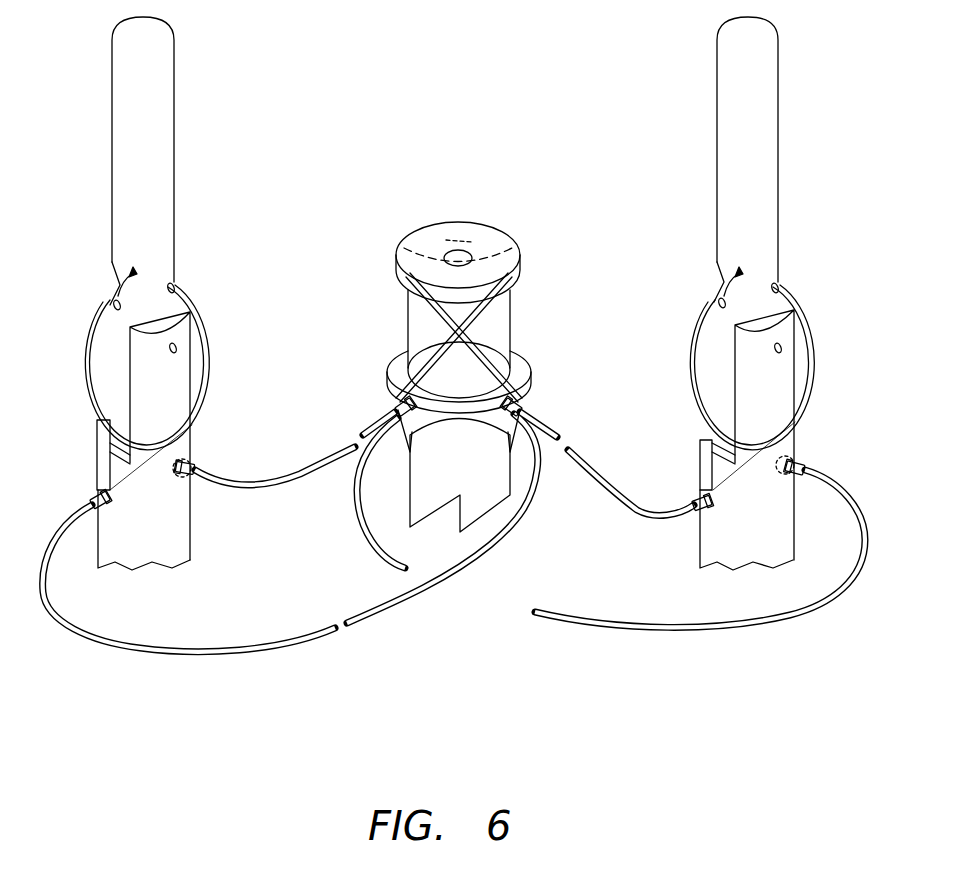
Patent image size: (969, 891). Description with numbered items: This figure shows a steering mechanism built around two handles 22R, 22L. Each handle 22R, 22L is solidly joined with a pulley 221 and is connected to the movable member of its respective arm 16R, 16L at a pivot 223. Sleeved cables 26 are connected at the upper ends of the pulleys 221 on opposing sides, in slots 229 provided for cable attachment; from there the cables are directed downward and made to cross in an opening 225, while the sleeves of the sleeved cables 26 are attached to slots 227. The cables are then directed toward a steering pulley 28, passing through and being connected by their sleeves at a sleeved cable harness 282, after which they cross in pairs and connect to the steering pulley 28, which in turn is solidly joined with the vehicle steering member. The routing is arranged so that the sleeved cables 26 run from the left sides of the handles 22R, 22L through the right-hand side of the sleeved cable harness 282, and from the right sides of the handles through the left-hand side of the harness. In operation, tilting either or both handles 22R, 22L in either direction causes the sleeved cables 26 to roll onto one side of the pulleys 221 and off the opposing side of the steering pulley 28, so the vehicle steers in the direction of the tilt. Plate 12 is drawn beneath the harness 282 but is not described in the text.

The mounting plate 12 is at (418, 506).
The arm 16L is at (168, 537).
The arm 16R is at (705, 546).
The handle 22L is at (167, 96).
The handle 22R is at (767, 58).
The sleeved cables 26 is at (530, 610).
The steering pulley 28 is at (467, 226).
The pulleys 221 is at (105, 303).
The pivot 223 is at (781, 348).
The opening 225 is at (108, 443).
The slots 227 is at (797, 466).
The slots for cable attachment 229 is at (778, 286).
The sleeved cable harness 282 is at (517, 370).